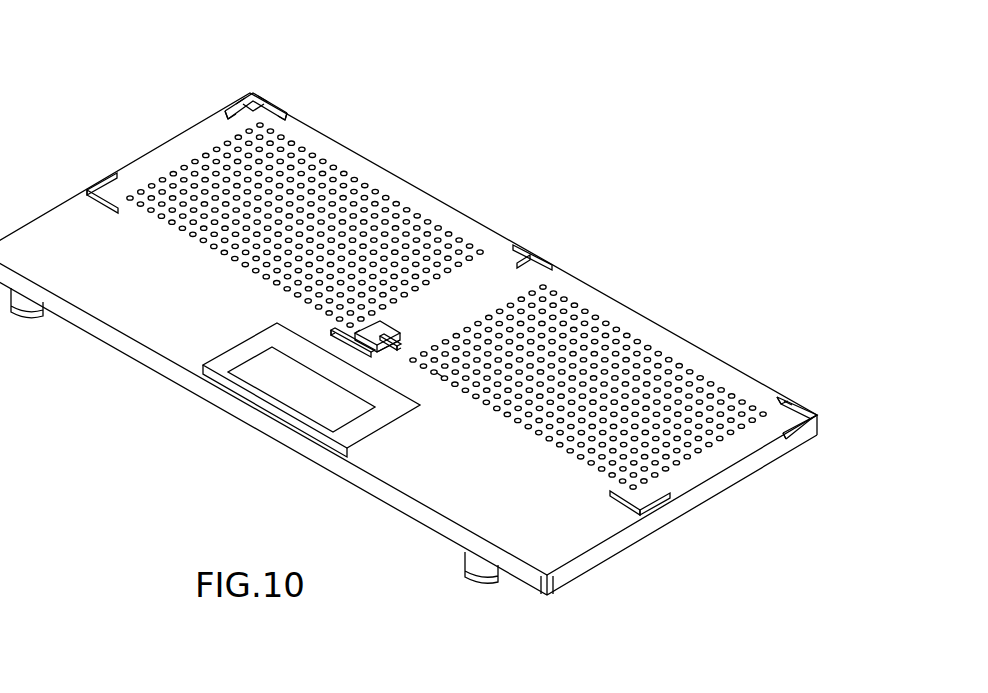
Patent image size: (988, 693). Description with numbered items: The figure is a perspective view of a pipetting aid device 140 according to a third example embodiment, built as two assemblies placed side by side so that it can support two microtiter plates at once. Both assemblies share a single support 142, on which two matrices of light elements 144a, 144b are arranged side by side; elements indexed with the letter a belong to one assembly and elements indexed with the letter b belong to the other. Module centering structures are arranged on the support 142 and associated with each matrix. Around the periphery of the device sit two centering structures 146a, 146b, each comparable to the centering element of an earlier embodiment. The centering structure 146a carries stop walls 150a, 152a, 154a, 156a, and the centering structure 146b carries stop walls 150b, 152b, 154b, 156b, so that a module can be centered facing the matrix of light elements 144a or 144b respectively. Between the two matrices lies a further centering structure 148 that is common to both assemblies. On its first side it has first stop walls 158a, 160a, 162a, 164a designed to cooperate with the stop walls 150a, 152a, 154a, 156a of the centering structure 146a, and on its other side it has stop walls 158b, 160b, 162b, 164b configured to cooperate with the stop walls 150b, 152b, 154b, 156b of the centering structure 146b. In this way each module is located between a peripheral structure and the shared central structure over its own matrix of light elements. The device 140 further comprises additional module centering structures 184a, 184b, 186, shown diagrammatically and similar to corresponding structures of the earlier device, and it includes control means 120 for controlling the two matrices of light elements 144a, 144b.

The pipetting aid device 140 is at (680, 285).
The support 142 is at (458, 218).
The matrix of light elements 144a is at (373, 187).
The matrix of light elements 144b is at (685, 473).
The centering structure 146a is at (257, 90).
The centering structure 146b is at (803, 412).
The stop wall 150a is at (240, 97).
The stop wall 150b is at (783, 452).
The stop wall 152a is at (224, 113).
The stop wall 152b is at (818, 424).
The stop wall 154a is at (290, 118).
The stop wall 154b is at (778, 398).
The stop wall 156a is at (262, 100).
The stop wall 156b is at (788, 404).
The additional module centering structure 184a is at (100, 184).
The additional module centering structure 184b is at (655, 507).
The additional module centering structure 186 is at (540, 250).
The control means 120 is at (212, 365).
The centering structure 148 is at (370, 350).
The first stop wall 158a is at (357, 332).
The stop wall 158b is at (388, 350).
The first stop wall 160a is at (332, 333).
The stop wall 160b is at (396, 370).
The first stop wall 162a is at (380, 333).
The stop wall 162b is at (400, 343).
The first stop wall 164a is at (360, 332).
The stop wall 164b is at (440, 376).